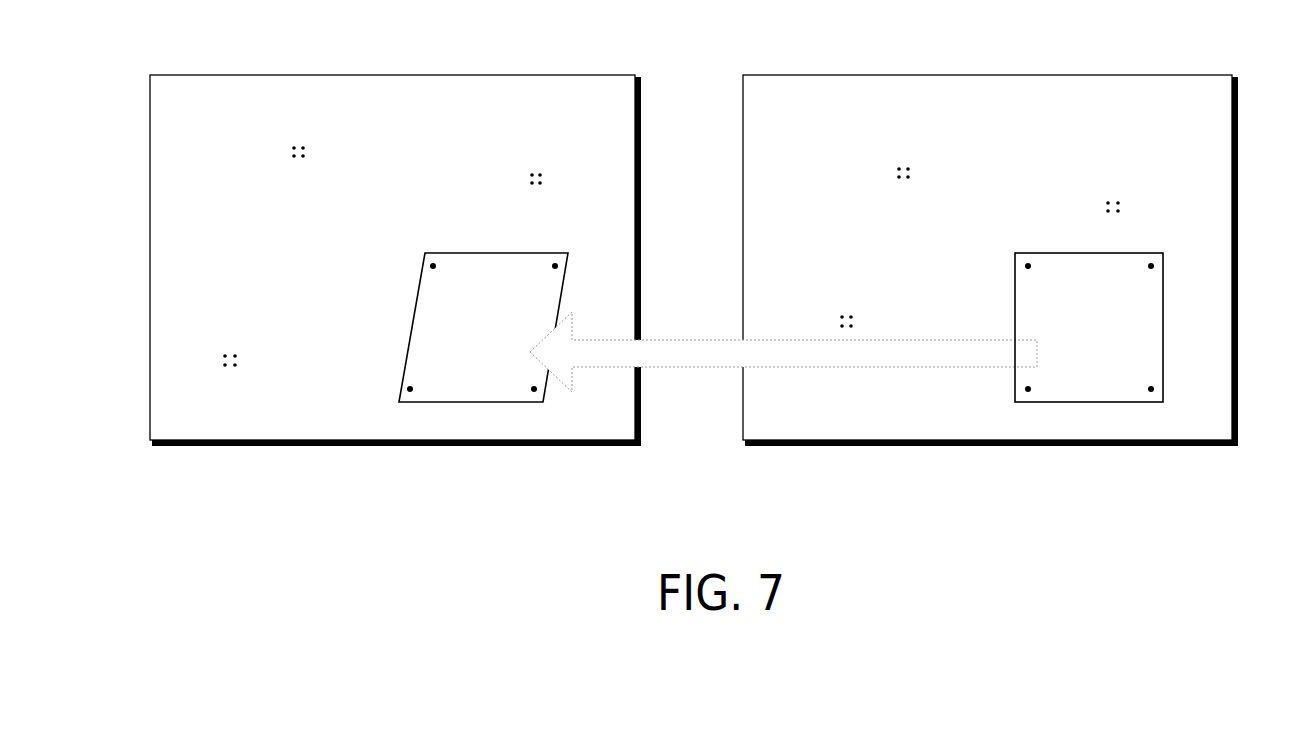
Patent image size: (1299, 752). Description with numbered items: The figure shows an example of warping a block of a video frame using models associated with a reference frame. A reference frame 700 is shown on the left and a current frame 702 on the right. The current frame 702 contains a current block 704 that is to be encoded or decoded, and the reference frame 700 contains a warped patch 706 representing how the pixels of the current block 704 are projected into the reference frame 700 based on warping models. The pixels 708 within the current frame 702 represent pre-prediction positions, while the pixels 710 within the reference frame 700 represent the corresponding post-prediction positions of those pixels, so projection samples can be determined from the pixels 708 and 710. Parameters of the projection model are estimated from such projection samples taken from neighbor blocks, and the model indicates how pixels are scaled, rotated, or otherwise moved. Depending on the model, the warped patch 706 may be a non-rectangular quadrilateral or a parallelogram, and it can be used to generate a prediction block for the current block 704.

The reference frame 700 is at (401, 452).
The current frame 702 is at (992, 452).
The current block 704 is at (1150, 252).
The warped patch 706 is at (555, 252).
The pixels within the current frame 708 is at (903, 163).
The pixels within the reference frame 710 is at (298, 143).